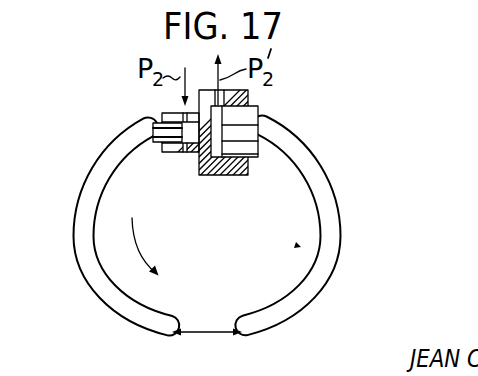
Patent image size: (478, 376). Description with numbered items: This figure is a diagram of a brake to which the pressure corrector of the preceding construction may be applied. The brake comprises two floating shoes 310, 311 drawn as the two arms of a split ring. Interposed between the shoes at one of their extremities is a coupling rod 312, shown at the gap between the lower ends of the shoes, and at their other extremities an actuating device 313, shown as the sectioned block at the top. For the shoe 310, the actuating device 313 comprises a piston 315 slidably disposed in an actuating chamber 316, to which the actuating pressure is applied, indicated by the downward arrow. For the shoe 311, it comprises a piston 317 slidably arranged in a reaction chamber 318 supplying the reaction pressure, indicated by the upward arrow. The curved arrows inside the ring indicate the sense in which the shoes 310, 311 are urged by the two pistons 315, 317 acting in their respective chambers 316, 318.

The floating shoe 310 is at (92, 272).
The floating shoe 311 is at (327, 260).
The coupling rod 312 is at (200, 335).
The actuating device 313 is at (220, 182).
The piston 315 is at (158, 144).
The actuating chamber 316 is at (193, 157).
The piston 317 is at (259, 140).
The reaction chamber 318 is at (218, 128).